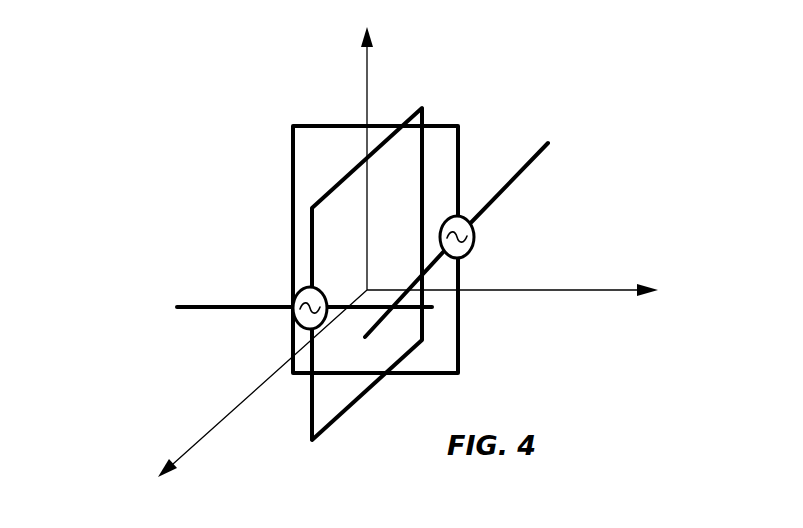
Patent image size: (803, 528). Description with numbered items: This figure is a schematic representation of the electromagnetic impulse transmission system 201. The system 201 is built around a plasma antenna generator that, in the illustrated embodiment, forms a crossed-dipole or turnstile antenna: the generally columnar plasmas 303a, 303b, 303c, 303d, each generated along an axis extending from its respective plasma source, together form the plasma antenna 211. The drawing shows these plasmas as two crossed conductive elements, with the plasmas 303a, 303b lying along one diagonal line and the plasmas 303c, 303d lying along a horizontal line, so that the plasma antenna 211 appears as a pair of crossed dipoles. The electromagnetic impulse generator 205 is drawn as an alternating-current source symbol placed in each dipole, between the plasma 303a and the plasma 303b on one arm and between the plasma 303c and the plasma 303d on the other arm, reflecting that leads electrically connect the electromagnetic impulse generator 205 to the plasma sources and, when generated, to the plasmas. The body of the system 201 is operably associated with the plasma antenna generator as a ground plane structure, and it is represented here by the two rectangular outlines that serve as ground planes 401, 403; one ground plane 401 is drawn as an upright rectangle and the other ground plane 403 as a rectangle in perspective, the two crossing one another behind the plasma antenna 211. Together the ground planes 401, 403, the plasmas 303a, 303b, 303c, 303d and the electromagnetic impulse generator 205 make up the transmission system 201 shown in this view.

The electromagnetic impulse transmission system 201 is at (206, 167).
The ground plane 401 is at (300, 124).
The ground plane 403 is at (428, 108).
The plasma 303a is at (538, 156).
The plasma 303b is at (436, 267).
The plasma 303c is at (400, 320).
The plasma 303d is at (193, 312).
The plasma antenna 211 is at (256, 363).
The electromagnetic impulse generator 205 is at (293, 292).